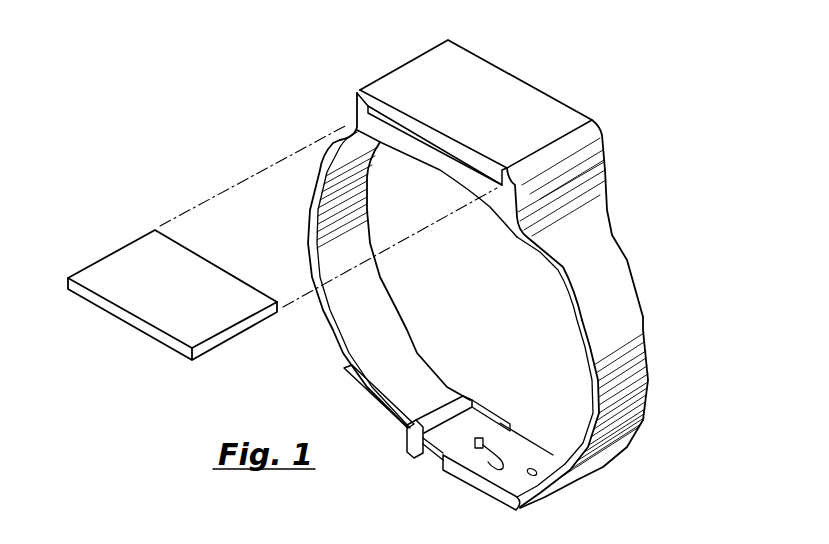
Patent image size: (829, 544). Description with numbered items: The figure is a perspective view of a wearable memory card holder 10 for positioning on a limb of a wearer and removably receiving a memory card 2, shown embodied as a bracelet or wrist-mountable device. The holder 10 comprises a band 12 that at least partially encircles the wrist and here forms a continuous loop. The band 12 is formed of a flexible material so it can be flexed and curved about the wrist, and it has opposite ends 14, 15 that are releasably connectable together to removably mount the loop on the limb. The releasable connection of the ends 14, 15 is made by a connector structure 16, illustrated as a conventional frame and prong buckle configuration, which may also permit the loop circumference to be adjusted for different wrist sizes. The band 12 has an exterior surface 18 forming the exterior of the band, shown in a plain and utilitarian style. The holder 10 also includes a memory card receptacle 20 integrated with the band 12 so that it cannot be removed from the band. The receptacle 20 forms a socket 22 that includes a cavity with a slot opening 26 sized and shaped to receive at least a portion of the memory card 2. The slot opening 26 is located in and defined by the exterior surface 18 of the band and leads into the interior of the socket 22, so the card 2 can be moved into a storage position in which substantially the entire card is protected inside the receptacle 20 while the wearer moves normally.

The memory card 2 is at (130, 265).
The wearable memory card holder 10 is at (600, 114).
The band 12 is at (613, 328).
The end 14 is at (474, 420).
The end 15 is at (353, 380).
The connector structure 16 is at (430, 474).
The exterior surface 18 is at (597, 267).
The memory card receptacle 20 is at (505, 55).
The socket 22 is at (358, 91).
The slot opening 26 is at (367, 108).